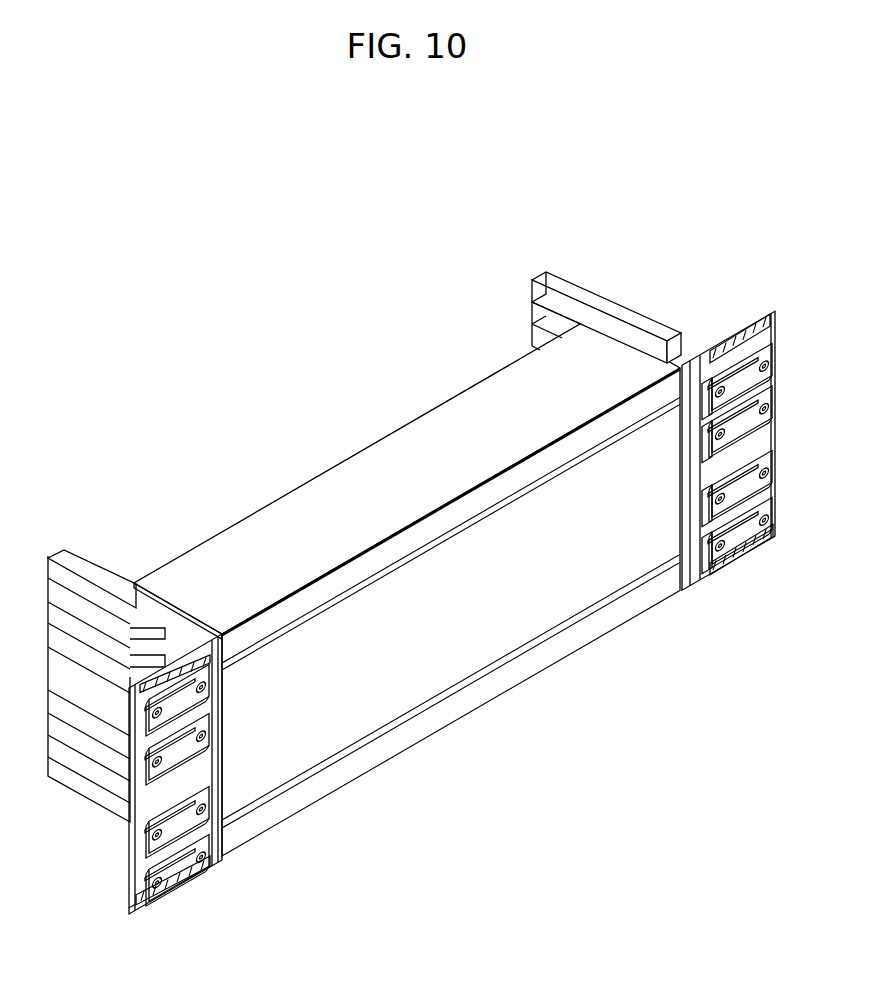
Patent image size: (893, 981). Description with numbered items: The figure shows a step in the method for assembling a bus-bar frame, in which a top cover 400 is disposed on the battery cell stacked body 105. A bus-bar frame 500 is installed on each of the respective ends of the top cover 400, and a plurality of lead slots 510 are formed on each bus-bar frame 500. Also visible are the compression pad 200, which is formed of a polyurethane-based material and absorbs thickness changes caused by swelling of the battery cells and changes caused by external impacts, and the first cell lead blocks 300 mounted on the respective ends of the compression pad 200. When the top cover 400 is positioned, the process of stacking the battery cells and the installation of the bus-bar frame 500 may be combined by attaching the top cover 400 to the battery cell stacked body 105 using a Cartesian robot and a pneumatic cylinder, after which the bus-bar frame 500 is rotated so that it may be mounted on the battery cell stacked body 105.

The battery cell stacked body 105 is at (407, 552).
The compression pad 200 is at (398, 453).
The first cell lead block 300 is at (556, 287).
The top cover 400 is at (432, 663).
The bus-bar frame 500 is at (750, 562).
The lead slot 510 is at (178, 697).